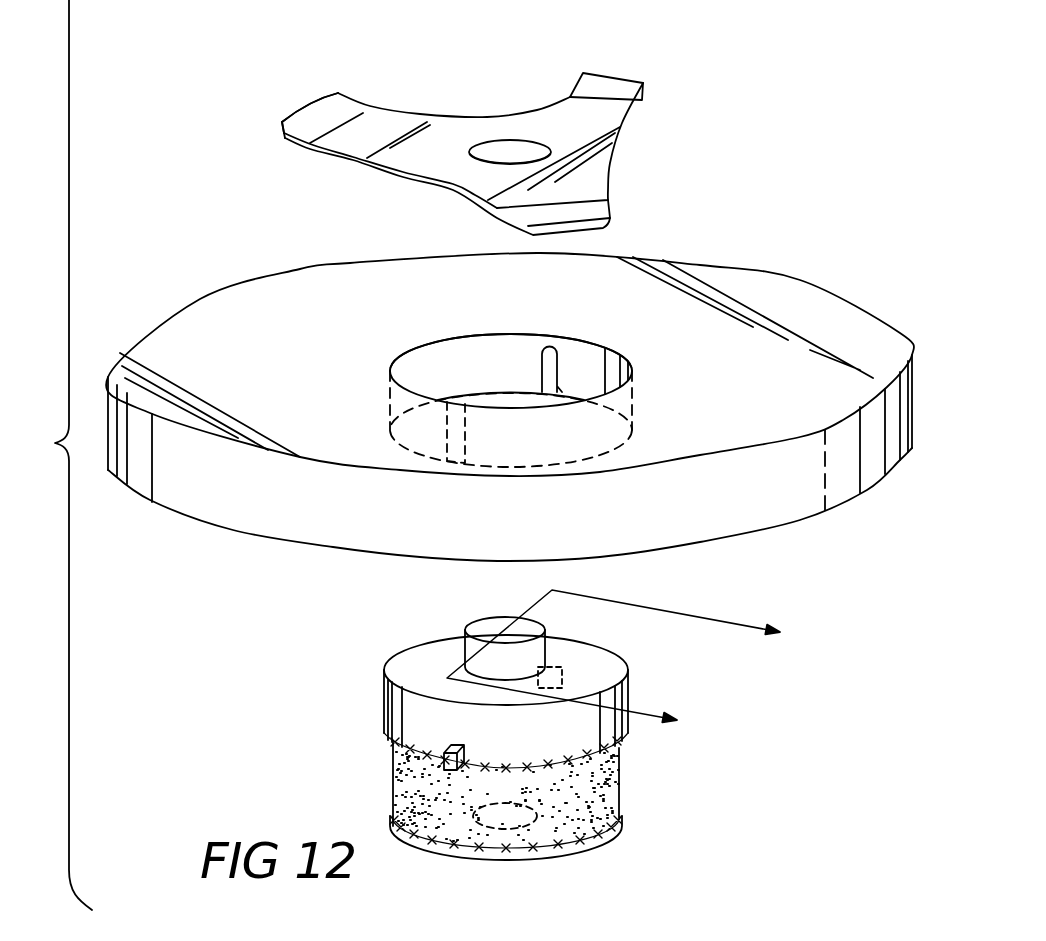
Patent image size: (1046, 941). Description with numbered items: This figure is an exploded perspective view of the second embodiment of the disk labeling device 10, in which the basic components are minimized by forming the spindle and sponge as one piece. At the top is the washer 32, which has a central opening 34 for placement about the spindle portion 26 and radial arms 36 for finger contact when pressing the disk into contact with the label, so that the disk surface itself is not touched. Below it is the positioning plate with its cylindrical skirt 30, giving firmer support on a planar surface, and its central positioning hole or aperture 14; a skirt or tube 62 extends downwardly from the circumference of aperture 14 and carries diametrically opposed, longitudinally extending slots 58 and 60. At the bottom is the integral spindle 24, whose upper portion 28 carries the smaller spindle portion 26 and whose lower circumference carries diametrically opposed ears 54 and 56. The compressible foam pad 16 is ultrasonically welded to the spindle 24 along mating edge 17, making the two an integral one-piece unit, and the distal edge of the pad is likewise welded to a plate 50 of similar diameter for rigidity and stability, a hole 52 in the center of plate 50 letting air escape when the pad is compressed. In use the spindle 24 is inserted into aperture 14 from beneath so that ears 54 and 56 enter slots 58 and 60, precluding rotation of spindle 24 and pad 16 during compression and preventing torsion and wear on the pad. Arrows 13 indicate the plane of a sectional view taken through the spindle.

The filter assembly 10 is at (55, 455).
The washer 32 is at (502, 117).
The central opening 34 is at (497, 155).
The radial arms 36 is at (308, 118).
The cylindrical skirt 30 is at (753, 490).
The positioning hole 14 is at (513, 403).
The skirt or tube 62 is at (467, 360).
The slot 60 is at (548, 368).
The slot 58 is at (447, 433).
The spindle 24 is at (553, 751).
The cap 28 is at (412, 667).
The spindle portion 26 is at (487, 632).
The ear 56 is at (562, 675).
The section line 13- 13 is at (639, 665).
The mating edge 17 is at (490, 848).
The compressible foam pad 16 is at (610, 777).
The ear 54 is at (442, 765).
The hole 52 is at (557, 845).
The plate 50 is at (612, 837).